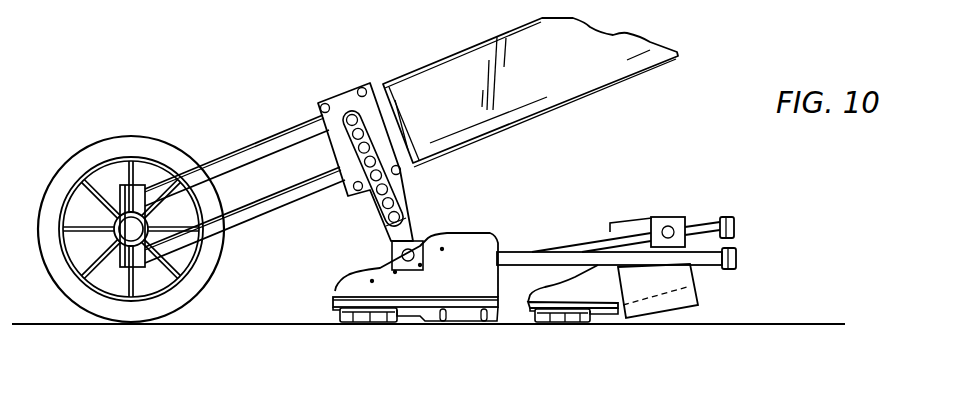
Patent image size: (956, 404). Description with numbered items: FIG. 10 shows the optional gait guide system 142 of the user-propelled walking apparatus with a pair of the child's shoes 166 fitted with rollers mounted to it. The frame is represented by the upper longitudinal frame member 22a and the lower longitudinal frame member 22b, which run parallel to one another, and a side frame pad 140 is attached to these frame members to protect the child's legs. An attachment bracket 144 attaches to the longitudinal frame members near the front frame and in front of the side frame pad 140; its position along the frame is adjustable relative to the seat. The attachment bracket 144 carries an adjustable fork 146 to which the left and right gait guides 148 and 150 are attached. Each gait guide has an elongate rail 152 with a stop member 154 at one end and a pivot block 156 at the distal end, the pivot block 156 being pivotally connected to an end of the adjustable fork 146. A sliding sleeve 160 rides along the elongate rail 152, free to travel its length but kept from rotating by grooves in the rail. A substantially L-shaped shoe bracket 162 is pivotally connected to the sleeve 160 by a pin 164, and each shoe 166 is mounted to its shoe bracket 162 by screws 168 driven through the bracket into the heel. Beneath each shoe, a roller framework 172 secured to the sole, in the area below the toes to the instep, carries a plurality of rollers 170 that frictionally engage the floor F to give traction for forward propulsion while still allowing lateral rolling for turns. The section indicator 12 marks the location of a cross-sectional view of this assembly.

The section line indicator 12 is at (357, 254).
The upper longitudinal frame member 22a is at (259, 139).
The lower longitudinal frame member 22b is at (248, 223).
The side frame pad 140 is at (438, 65).
The gait guide system 142 is at (766, 236).
The attachment bracket 144 is at (342, 100).
The adjustable fork 146 is at (400, 188).
The left gait guide 148 is at (710, 268).
The right gait guide 150 is at (704, 221).
The elongate rail 152 is at (548, 258).
The stop member 154 is at (734, 222).
The pivot block 156 is at (392, 249).
The sliding sleeve 160 is at (655, 225).
The shoe bracket 162 is at (687, 313).
The pin 164 is at (672, 226).
The shoe 166 is at (467, 243).
The screw 168 is at (487, 325).
The roller 170 is at (375, 327).
The roller framework 172 is at (333, 312).
The floor F is at (222, 327).